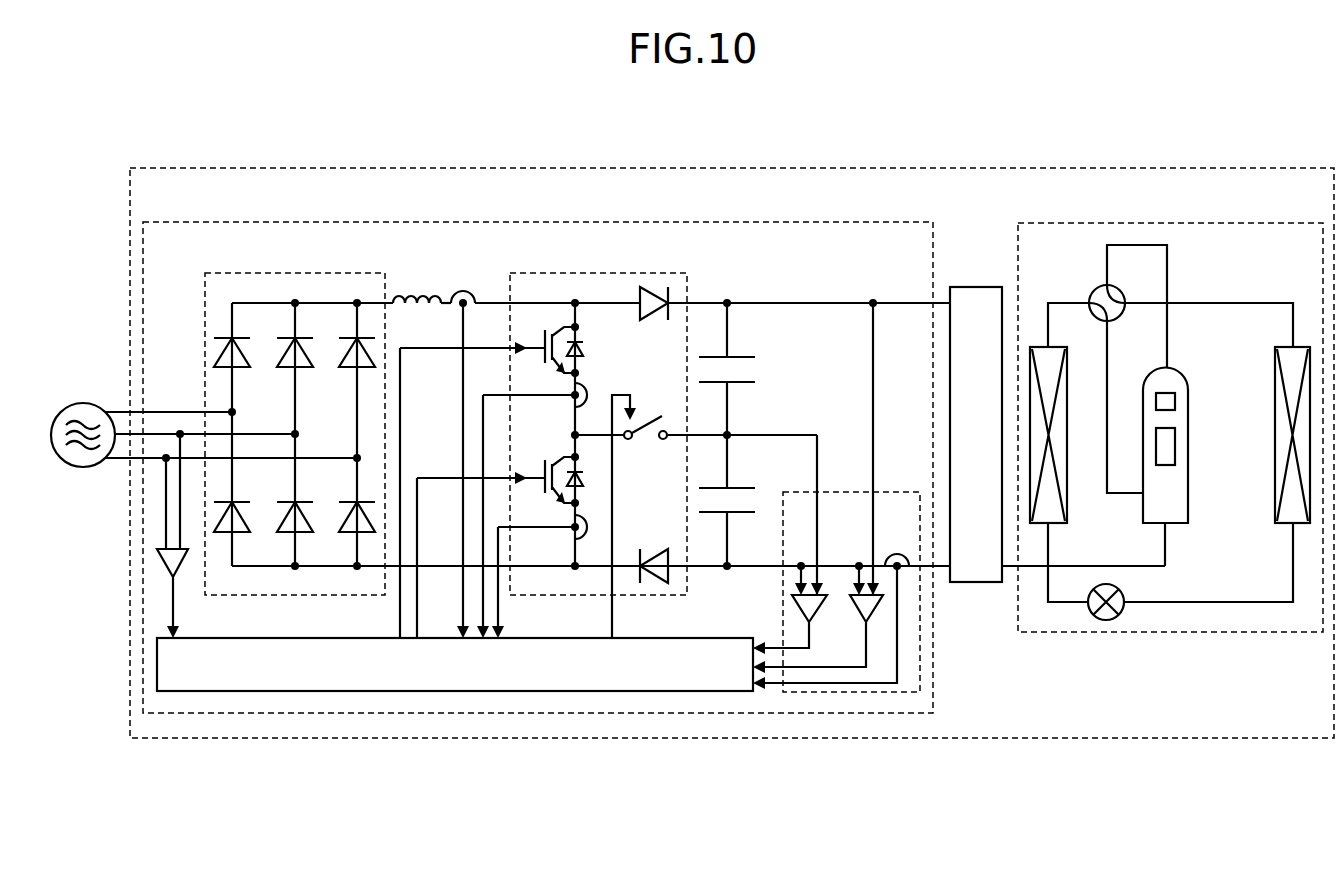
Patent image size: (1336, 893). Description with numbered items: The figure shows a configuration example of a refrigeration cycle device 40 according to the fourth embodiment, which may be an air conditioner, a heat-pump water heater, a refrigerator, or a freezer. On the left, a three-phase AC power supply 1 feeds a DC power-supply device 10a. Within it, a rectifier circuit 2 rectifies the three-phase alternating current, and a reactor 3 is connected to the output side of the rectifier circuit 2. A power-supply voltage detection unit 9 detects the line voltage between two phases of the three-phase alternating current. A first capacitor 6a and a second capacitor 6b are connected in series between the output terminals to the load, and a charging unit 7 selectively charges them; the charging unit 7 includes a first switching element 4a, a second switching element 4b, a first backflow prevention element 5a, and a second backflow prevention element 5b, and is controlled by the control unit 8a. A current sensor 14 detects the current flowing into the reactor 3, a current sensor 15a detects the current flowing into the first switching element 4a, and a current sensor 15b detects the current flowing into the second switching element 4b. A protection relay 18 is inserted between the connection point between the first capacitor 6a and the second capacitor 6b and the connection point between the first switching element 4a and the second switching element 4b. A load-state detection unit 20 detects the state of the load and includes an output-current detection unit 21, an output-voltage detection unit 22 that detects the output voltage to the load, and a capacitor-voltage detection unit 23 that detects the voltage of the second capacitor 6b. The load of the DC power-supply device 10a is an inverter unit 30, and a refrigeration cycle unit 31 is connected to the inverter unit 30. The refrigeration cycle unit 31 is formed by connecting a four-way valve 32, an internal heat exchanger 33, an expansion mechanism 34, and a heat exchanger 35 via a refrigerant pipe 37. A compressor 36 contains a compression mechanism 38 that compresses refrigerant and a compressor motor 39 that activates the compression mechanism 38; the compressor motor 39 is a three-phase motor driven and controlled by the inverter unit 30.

The three-phase AC power supply 1 is at (83, 403).
The rectifier circuit 2 is at (265, 273).
The reactor 3 is at (408, 288).
The first switching element 4a is at (536, 362).
The second switching element 4b is at (534, 472).
The first backflow prevention element 5a is at (658, 322).
The second backflow prevention element 5b is at (658, 556).
The first capacitor 6a is at (715, 354).
The second capacitor 6b is at (715, 484).
The charging unit 7 is at (568, 273).
The control unit 8a is at (234, 638).
The power-supply voltage detection unit 9 is at (168, 575).
The DC power-supply device 10a is at (805, 222).
The current sensor 14 is at (463, 290).
The current sensor 15a is at (588, 392).
The current sensor 15b is at (590, 527).
The protection relay 18 is at (642, 418).
The load-state detection unit 20 is at (841, 490).
The output-current detection unit 21 is at (894, 552).
The output-voltage detection unit 22 is at (856, 612).
The capacitor-voltage detection unit 23 is at (792, 608).
The inverter unit 30 is at (975, 287).
The refrigeration cycle unit 31 is at (1076, 223).
The four-way valve 32 is at (1092, 286).
The internal heat exchanger 33 is at (1060, 347).
The expansion mechanism 34 is at (1122, 592).
The heat exchanger 35 is at (1280, 347).
The compressor 36 is at (1190, 488).
The refrigerant pipe 37 is at (1220, 303).
The compression mechanism 38 is at (1176, 400).
The compressor motor 39 is at (1176, 446).
The refrigeration cycle device 40 is at (1181, 168).